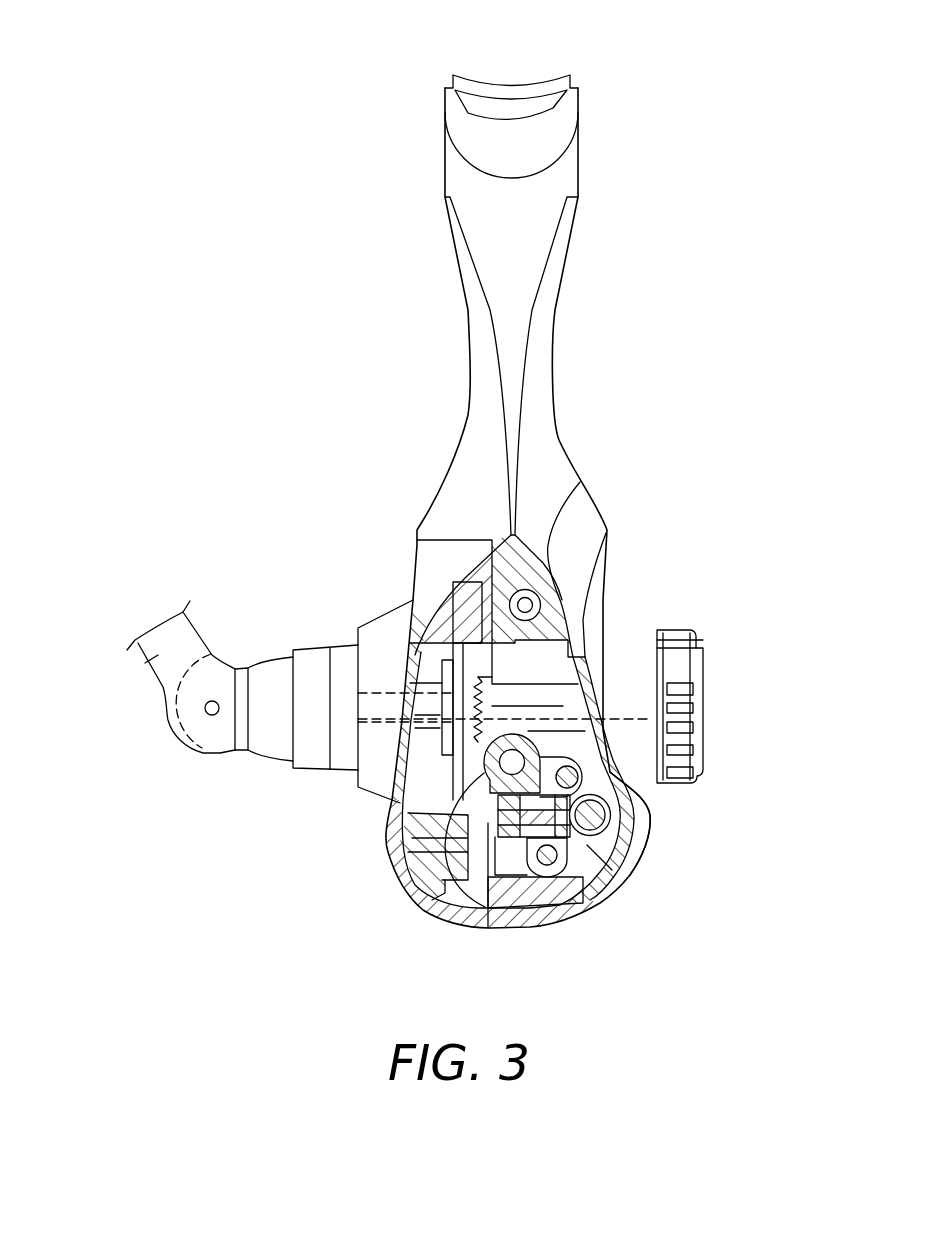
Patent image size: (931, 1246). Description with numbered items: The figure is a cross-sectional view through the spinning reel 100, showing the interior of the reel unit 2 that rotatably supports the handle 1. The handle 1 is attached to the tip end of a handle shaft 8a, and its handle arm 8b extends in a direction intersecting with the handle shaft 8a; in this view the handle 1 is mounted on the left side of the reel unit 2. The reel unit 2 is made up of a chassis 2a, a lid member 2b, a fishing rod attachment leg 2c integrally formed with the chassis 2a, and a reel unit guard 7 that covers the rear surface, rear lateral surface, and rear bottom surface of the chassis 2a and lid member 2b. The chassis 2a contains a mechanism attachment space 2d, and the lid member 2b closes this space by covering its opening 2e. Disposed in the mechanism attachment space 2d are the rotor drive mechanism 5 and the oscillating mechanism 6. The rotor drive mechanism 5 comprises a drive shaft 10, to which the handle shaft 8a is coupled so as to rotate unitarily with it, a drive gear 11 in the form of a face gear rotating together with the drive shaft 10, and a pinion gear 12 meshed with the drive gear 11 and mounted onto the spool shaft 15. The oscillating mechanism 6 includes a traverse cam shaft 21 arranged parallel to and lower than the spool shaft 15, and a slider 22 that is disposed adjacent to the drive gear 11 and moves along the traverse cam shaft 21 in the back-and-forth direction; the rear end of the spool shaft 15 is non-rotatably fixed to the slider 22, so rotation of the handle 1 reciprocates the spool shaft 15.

The spinning reel 100 is at (641, 290).
The handle 1 is at (207, 612).
The reel unit 2 is at (614, 506).
The chassis 2a is at (650, 827).
The lid member 2b is at (438, 548).
The fishing rod attachment leg 2c is at (483, 192).
The mechanism attachment space 2d is at (552, 558).
The opening 2e is at (538, 882).
The rotor drive mechanism 5 is at (526, 640).
The oscillating mechanism 6 is at (598, 873).
The reel unit guard 7 is at (405, 890).
The handle shaft 8a is at (390, 692).
The handle arm 8b is at (135, 665).
The drive shaft 10 is at (546, 637).
The drive gear 11 is at (468, 662).
The pinion gear 12 is at (430, 850).
The spool shaft 15 is at (663, 713).
The traverse cam shaft 21 is at (613, 806).
The slider 22 is at (493, 842).